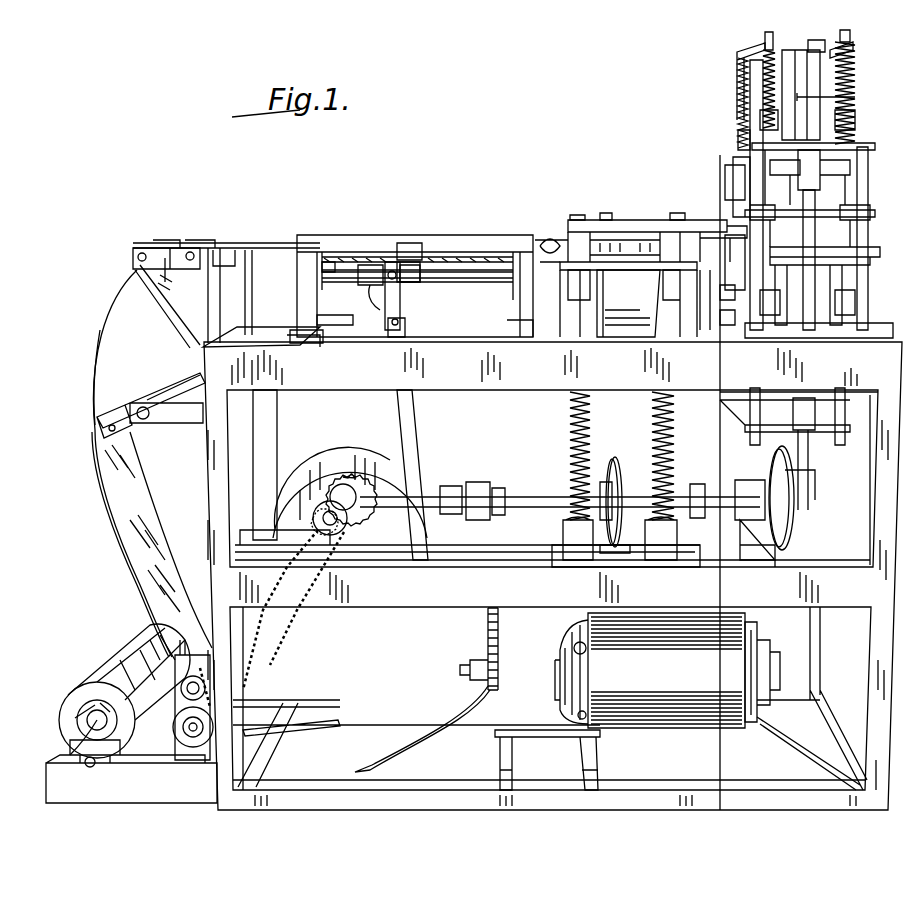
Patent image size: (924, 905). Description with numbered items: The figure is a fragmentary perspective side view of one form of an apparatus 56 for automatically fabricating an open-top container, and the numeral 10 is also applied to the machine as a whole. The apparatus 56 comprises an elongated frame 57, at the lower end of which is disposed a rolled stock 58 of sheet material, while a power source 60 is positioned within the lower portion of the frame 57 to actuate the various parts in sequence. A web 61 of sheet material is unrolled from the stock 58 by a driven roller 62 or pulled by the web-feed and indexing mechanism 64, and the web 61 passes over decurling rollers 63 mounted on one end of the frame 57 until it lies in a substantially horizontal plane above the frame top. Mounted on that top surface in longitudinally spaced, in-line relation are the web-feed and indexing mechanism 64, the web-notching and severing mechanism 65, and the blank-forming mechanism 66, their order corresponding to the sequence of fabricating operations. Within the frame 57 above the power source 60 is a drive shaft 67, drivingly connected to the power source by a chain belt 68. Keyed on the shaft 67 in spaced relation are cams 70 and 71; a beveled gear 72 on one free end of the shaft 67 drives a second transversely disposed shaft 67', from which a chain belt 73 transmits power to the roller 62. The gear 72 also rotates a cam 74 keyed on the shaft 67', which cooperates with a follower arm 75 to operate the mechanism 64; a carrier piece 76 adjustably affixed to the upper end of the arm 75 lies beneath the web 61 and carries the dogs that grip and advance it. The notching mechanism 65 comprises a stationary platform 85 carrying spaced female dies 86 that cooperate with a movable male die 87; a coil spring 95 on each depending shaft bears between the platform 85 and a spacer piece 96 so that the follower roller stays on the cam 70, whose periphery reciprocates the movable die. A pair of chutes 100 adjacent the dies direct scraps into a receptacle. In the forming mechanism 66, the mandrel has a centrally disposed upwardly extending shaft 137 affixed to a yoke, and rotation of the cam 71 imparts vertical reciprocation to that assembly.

The machine 10 is at (727, 177).
The apparatus 56 is at (463, 224).
The elongated frame 57 is at (362, 375).
The rolled stock 58 is at (110, 678).
The power source 60 is at (680, 680).
The web 61 is at (275, 243).
The driven roller 62 is at (205, 715).
The decurling rollers 63 is at (101, 369).
The web-feed and indexing mechanism 64 is at (371, 238).
The web-notching and severing mechanism 65 is at (607, 220).
The blank-forming mechanism 66 is at (730, 120).
The drive shaft 67 is at (567, 507).
The second transversely disposed shaft 67' is at (350, 569).
The chain belt 68 is at (478, 628).
The cam 70 is at (622, 470).
The cam 71 is at (790, 485).
The beveled gear 72 is at (353, 478).
The chain belt 73 is at (290, 620).
The cam 74 is at (320, 470).
The follower arm 75 is at (412, 452).
The carrier piece 76 is at (420, 282).
The stationary platform 85 is at (572, 262).
The female dies 86 is at (630, 238).
The male die 87 is at (614, 220).
The coil spring 95 is at (570, 408).
The spacer piece 96 is at (560, 555).
The chutes 100 is at (640, 309).
The shaft 137 is at (848, 98).